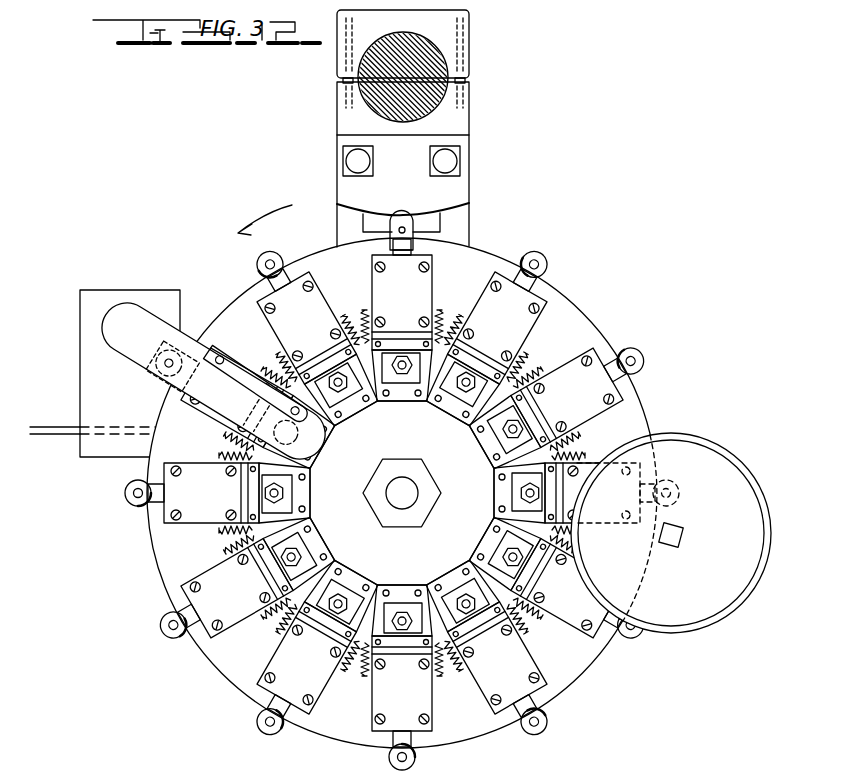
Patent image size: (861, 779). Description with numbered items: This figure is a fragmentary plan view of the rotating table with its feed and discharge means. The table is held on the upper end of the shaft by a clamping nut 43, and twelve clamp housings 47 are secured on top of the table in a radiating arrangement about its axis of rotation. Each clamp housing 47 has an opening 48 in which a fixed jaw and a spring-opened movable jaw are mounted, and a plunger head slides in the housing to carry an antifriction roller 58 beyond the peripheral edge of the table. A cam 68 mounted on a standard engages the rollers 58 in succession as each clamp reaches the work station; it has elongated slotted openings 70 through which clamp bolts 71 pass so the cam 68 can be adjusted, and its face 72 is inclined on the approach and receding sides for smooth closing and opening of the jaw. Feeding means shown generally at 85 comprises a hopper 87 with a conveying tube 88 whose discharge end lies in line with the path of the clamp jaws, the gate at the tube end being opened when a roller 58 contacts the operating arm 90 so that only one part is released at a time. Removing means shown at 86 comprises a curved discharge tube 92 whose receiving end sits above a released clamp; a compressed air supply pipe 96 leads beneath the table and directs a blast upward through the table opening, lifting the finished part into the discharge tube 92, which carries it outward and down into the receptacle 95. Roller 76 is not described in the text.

The clamping nut 43 is at (406, 520).
The clamp housing 47 is at (440, 411).
The opening 48 is at (577, 663).
The antifriction roller 58 is at (548, 262).
The cam 68 is at (453, 193).
The elongated slotted openings 70 is at (463, 141).
The clamp bolts 71 is at (457, 162).
The cam face 72 is at (448, 210).
The roller 76 is at (520, 745).
The feeding means 85 is at (652, 428).
The removing means 86 is at (190, 332).
The hopper 87 is at (722, 606).
The conveying tube 88 is at (520, 480).
The operating arm 90 is at (640, 353).
The discharge tube 92 is at (135, 313).
The receptacle 95 is at (85, 312).
The compressed air supply pipe 96 is at (48, 437).